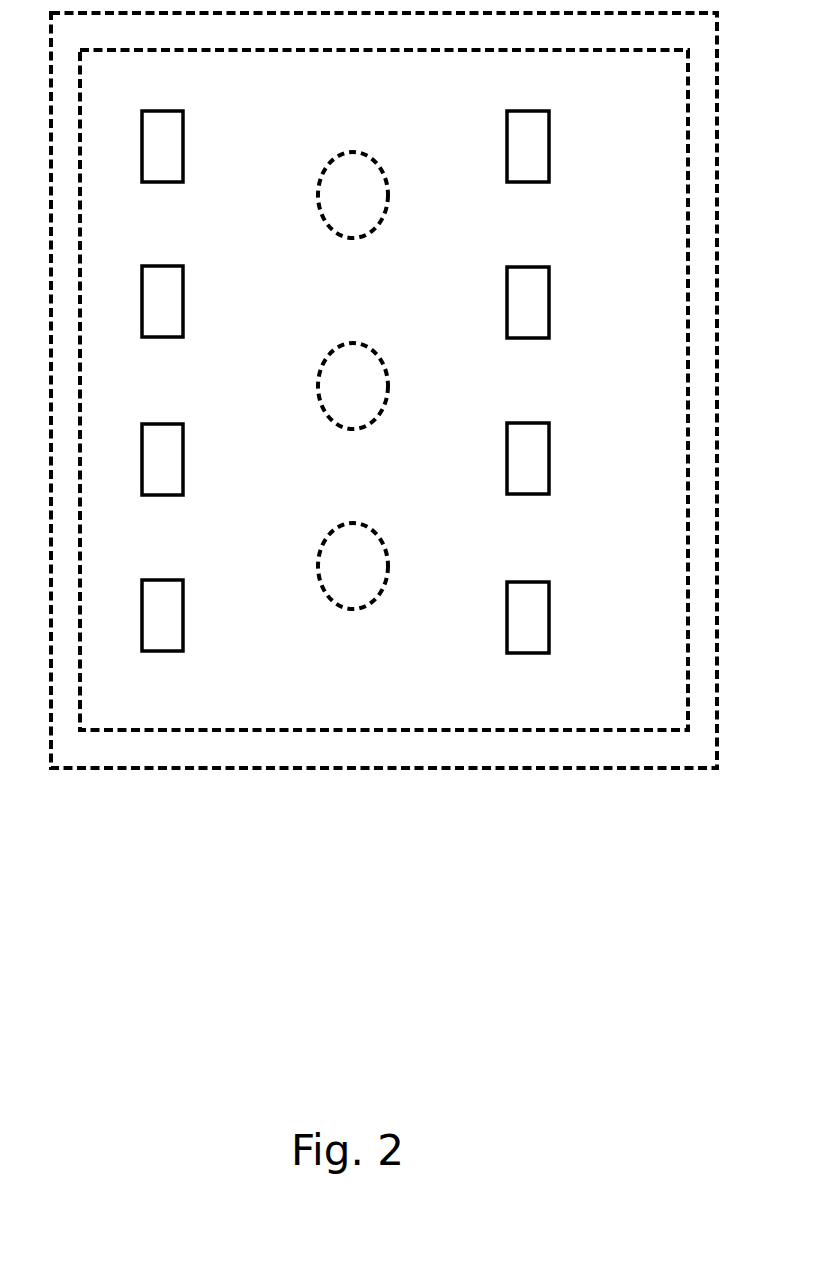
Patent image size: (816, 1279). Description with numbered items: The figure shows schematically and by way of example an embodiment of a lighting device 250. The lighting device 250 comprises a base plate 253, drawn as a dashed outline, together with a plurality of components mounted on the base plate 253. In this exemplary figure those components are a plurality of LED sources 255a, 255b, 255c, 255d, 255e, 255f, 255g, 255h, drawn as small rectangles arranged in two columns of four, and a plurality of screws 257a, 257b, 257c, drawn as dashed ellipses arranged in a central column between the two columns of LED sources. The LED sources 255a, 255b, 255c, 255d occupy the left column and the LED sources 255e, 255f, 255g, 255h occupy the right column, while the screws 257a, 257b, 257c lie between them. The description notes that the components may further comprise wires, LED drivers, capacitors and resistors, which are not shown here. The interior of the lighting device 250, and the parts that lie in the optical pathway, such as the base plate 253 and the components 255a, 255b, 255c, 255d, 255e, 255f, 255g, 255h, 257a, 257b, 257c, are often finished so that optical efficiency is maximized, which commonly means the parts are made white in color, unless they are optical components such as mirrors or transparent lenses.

The lighting device 250 is at (379, 1016).
The base plate 253 is at (245, 768).
The LED source 255a is at (186, 153).
The LED source 255b is at (186, 309).
The LED source 255c is at (186, 458).
The LED source 255d is at (186, 617).
The LED source 255e is at (551, 153).
The LED source 255f is at (551, 309).
The LED source 255g is at (551, 463).
The LED source 255h is at (551, 620).
The screw 257a is at (388, 197).
The screw 257b is at (388, 389).
The screw 257c is at (388, 558).